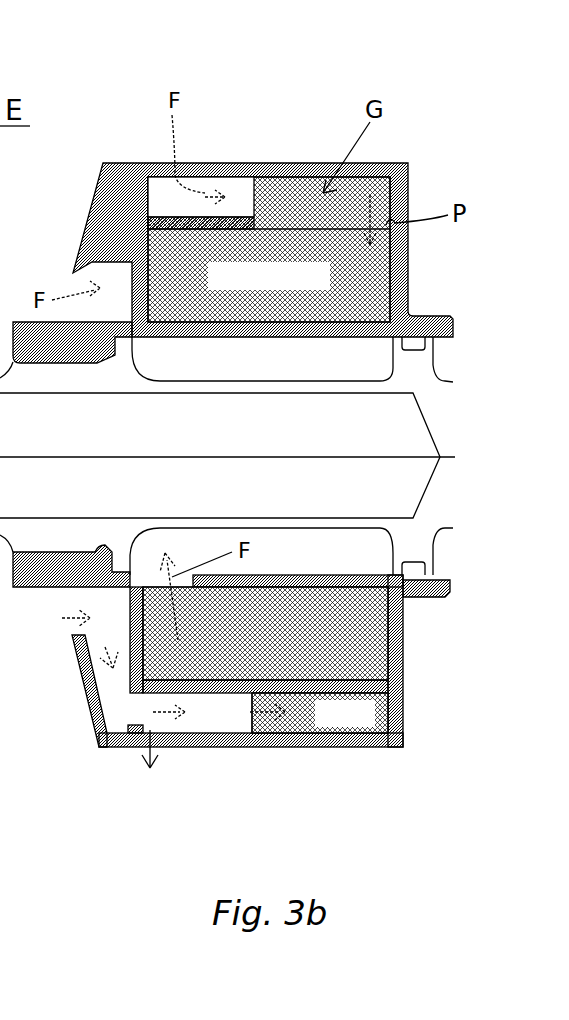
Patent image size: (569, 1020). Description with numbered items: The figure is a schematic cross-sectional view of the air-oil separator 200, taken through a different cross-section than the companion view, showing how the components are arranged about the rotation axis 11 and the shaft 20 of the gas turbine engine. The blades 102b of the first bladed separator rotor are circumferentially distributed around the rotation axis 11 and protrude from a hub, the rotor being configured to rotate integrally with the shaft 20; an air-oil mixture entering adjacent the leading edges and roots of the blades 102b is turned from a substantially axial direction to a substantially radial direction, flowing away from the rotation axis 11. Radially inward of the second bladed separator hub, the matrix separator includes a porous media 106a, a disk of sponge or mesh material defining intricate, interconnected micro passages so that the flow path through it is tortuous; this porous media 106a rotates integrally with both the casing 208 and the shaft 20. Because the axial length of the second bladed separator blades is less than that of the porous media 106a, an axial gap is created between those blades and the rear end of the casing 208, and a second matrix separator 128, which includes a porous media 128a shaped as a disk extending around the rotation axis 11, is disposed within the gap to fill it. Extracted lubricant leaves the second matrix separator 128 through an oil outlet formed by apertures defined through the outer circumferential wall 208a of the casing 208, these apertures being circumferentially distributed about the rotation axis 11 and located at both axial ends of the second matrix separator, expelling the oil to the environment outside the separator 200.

The air-oil separator 200 is at (541, 85).
The blades 102b is at (130, 187).
The outer circumferential wall 208a is at (205, 163).
The second matrix separator 128 is at (384, 194).
The porous media 106a is at (307, 290).
The shaft 20 is at (49, 384).
The rotation axis 11 is at (125, 455).
The porous media 128a is at (364, 728).
The casing 208 is at (337, 760).